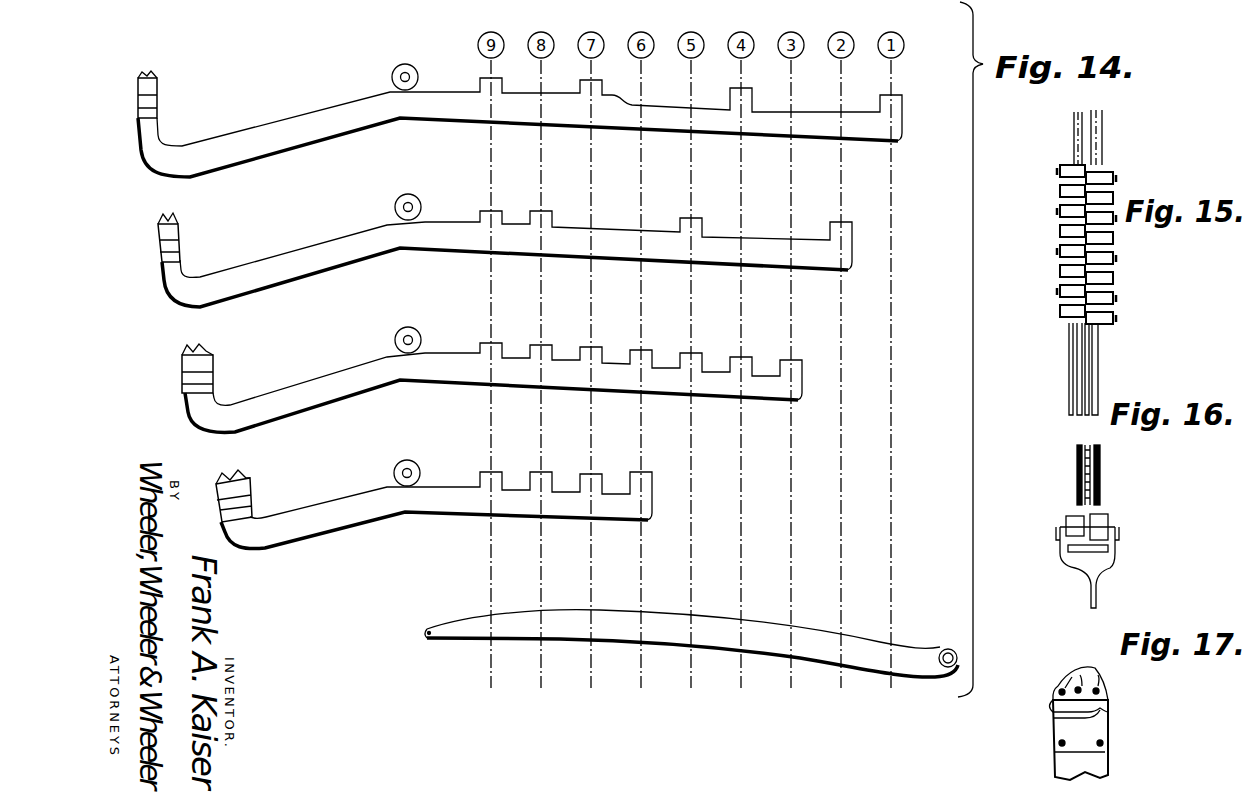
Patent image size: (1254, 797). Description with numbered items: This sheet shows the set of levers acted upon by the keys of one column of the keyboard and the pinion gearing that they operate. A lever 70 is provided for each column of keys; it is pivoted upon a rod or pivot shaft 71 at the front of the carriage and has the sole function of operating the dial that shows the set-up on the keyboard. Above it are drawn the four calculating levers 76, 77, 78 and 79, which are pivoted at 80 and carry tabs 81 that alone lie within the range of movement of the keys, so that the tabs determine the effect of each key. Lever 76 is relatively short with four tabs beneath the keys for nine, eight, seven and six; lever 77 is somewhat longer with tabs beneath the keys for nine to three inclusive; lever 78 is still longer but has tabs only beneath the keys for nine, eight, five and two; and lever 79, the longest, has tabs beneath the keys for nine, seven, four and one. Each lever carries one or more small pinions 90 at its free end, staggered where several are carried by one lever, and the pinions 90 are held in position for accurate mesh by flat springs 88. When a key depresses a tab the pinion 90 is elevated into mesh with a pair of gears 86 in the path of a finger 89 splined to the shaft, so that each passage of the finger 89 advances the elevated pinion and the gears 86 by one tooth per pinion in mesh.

In FIG. 14, the lever 70 is at (580, 627).
In FIG. 14, the pivot shaft 71 is at (948, 649).
In FIG. 14, the lever 76 is at (438, 498).
In FIG. 15, the lever 76 is at (1069, 375).
In FIG. 14, the lever 77 is at (444, 362).
In FIG. 15, the lever 77 is at (1079, 388).
In FIG. 14, the lever 78 is at (440, 230).
In FIG. 15, the lever 78 is at (1087, 400).
In FIG. 14, the lever 79 is at (467, 108).
In FIG. 15, the lever 79 is at (1100, 393).
In FIG. 16, the lever 79 is at (1097, 605).
In FIG. 14, the pivot 80 is at (410, 72).
In FIG. 14, the tabs 81 is at (618, 100).
In FIG. 15, the gears 86 is at (1082, 145).
In FIG. 16, the gears 86 is at (1086, 470).
In FIG. 14, the flat springs 88 is at (160, 228).
In FIG. 16, the flat springs 88 is at (1110, 560).
In FIG. 17, the flat springs 88 is at (1108, 704).
In FIG. 16, the finger 89 is at (1089, 483).
In FIG. 14, the brush tuft 90 is at (150, 78).
In FIG. 15, the brush tuft 90 is at (1114, 305).
In FIG. 16, the brush tuft 90 is at (1108, 527).
In FIG. 17, the brush tuft 90 is at (1090, 670).